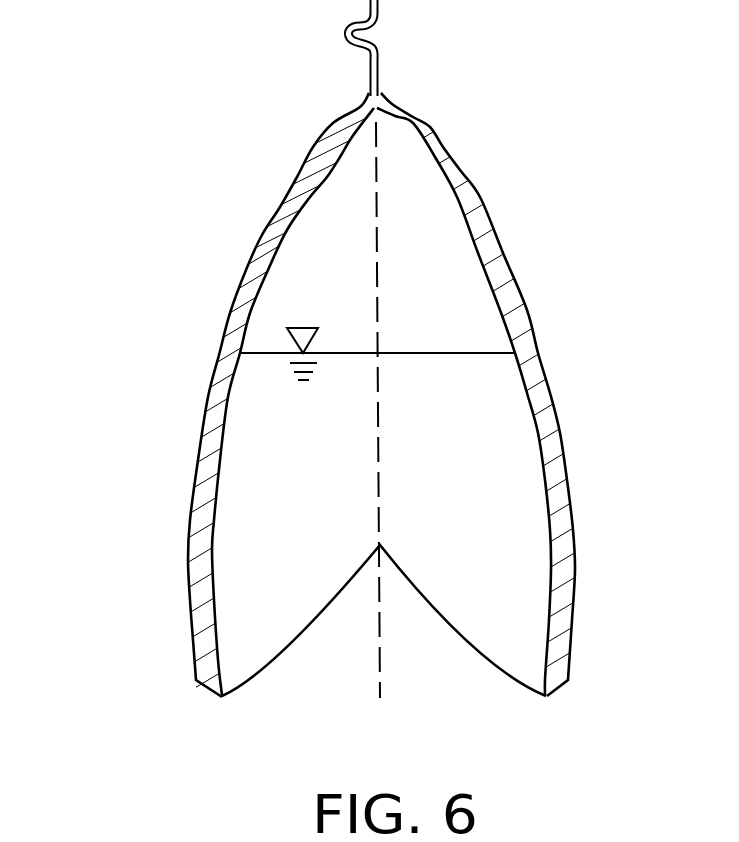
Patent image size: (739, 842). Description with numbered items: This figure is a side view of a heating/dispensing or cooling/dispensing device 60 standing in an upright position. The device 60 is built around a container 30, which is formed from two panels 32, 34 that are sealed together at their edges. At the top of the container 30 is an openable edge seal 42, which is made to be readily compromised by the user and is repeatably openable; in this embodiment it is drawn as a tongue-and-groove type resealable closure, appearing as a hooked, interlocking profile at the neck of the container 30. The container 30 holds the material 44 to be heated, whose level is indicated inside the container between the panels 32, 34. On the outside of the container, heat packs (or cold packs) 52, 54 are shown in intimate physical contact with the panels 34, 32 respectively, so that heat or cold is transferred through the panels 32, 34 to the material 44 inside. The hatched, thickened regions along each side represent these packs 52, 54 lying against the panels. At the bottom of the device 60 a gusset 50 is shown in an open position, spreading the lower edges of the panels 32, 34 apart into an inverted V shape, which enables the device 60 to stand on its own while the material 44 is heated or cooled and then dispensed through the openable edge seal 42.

The heating/dispensing or cooling/dispensing device 60 is at (150, 116).
The openable edge seal 42 is at (394, 25).
The container 30 is at (352, 155).
The heat pack (or cold pack) 54 is at (266, 212).
The panel 34 is at (250, 316).
The heat pack (or cold pack) 52 is at (488, 208).
The panel 32 is at (498, 287).
The material 44 is at (490, 448).
The gusset 50 is at (298, 664).